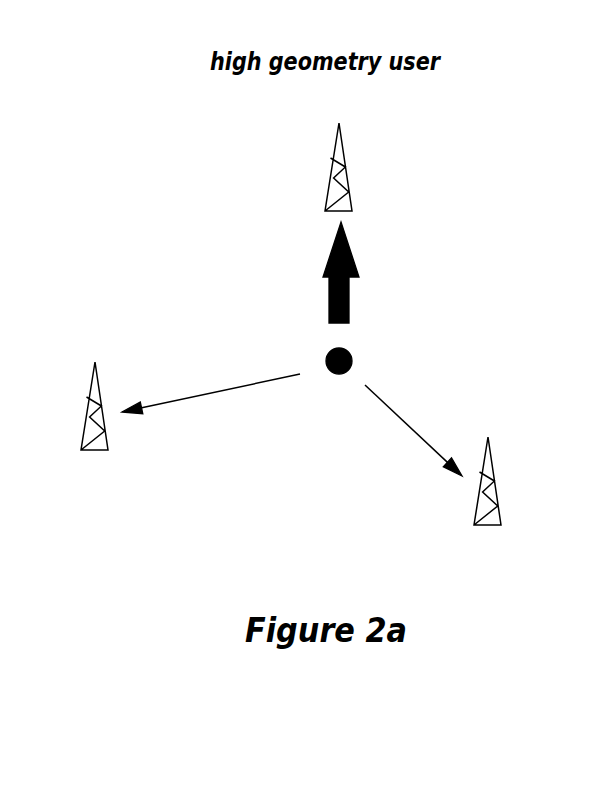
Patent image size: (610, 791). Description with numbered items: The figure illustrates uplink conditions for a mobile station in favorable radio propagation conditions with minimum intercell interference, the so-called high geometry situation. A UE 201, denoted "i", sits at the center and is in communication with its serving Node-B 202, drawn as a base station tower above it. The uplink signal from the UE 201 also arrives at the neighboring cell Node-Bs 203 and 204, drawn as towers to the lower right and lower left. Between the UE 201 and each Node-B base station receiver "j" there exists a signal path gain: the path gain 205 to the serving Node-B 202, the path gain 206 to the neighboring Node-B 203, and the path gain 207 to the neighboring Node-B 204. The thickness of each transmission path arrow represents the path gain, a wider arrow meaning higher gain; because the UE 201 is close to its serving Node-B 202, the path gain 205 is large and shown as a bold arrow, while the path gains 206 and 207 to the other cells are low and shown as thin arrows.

The UE 201 is at (404, 361).
The serving Node-B 202 is at (430, 214).
The neighboring cell Node-B 203 is at (574, 534).
The neighboring cell Node-B 204 is at (125, 517).
The path gain 205 is at (319, 299).
The path gain 206 is at (469, 429).
The path gain 207 is at (250, 427).